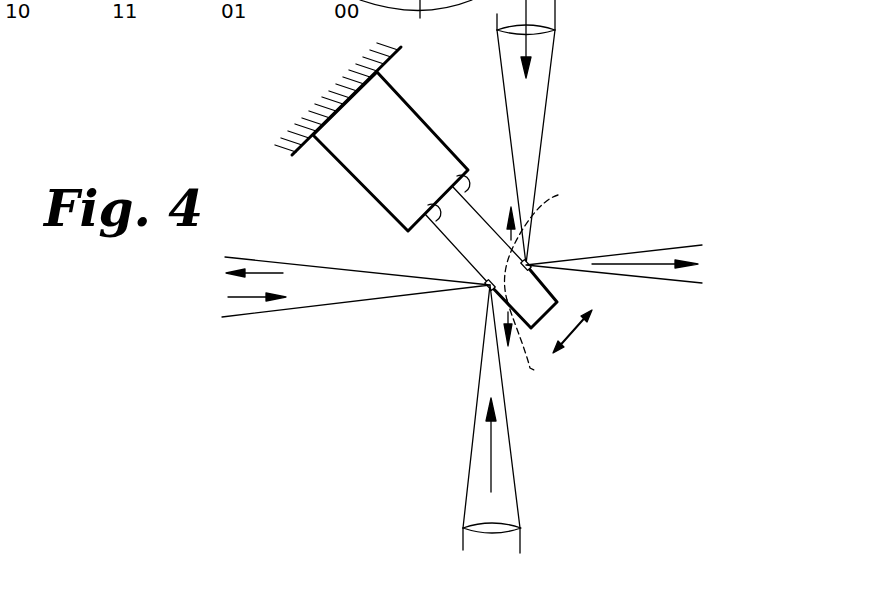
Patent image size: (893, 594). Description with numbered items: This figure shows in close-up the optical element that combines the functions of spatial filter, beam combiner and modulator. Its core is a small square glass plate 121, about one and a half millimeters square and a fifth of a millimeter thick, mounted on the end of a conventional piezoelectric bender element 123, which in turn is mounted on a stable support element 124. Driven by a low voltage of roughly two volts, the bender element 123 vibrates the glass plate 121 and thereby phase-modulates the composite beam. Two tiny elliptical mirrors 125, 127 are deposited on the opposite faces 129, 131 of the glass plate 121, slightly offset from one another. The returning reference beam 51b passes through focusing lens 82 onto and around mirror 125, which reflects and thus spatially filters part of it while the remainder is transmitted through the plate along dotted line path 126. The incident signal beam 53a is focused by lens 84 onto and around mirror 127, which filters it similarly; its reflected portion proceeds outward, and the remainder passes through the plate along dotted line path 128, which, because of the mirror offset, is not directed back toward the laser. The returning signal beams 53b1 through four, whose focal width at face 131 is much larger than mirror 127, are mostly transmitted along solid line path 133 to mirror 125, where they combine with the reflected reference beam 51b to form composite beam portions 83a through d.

The focusing lens 82 is at (540, 29).
The returning reference beam 51b is at (533, 113).
The stable support element 124 is at (310, 139).
The piezoelectric bender element 123 is at (405, 120).
The glass plate 121 is at (470, 202).
The face of glass plate 131 is at (450, 239).
The solid line path 133 is at (514, 296).
The elliptical mirror 125 is at (530, 256).
The elliptical mirror 127 is at (484, 293).
The face of glass plate 129 is at (488, 226).
The dotted line path 128 is at (549, 242).
The dotted line path 126 is at (538, 343).
The incident signal beam 53a is at (265, 271).
The returning signal beam 53b1 is at (252, 297).
The lens 84 is at (503, 528).
The beam portion of composite beam 83a is at (647, 277).